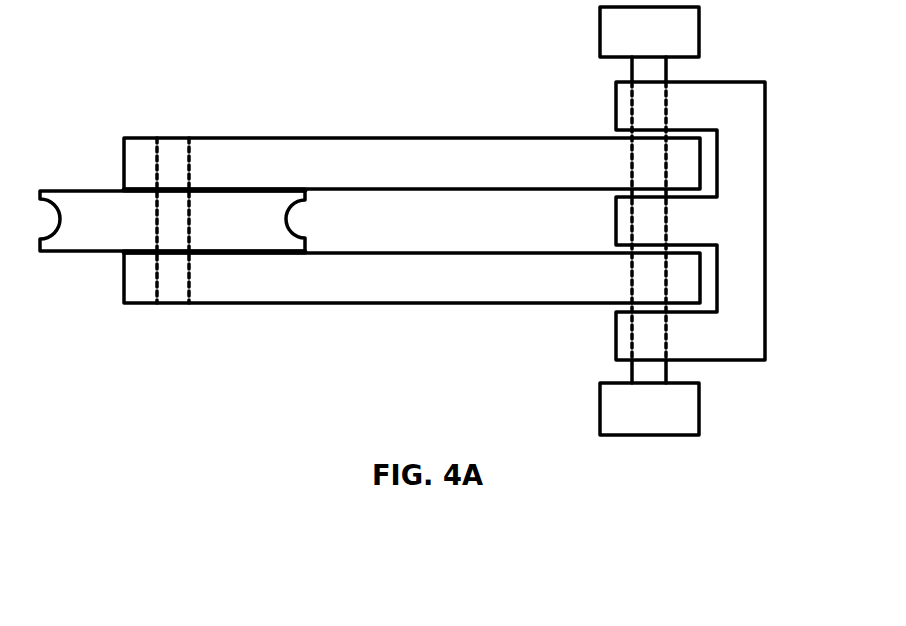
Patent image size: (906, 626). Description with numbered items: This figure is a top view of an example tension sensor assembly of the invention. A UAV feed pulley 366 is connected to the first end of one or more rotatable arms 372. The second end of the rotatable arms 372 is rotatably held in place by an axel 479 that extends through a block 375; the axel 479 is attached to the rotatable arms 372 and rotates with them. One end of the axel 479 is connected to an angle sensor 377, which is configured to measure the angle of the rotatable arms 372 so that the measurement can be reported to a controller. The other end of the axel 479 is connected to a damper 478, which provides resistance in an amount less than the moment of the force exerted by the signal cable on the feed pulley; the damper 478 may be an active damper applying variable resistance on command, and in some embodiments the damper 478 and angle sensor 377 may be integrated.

The UAV feed pulley 366 is at (97, 205).
The rotatable arm 372 is at (412, 220).
The block 375 is at (732, 98).
The angle sensor 377 is at (617, 32).
The damper 478 is at (617, 410).
The axel 479 is at (630, 376).